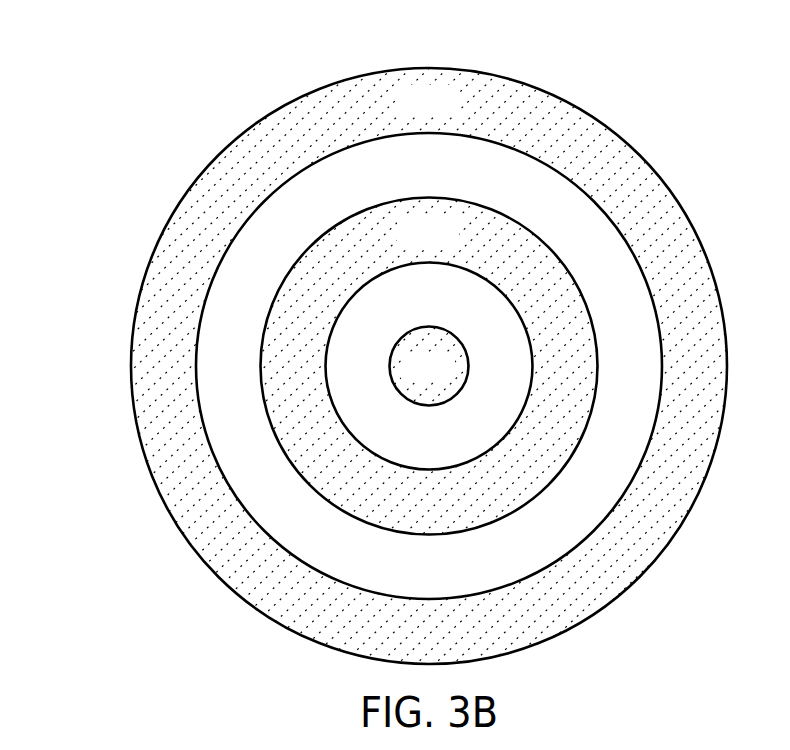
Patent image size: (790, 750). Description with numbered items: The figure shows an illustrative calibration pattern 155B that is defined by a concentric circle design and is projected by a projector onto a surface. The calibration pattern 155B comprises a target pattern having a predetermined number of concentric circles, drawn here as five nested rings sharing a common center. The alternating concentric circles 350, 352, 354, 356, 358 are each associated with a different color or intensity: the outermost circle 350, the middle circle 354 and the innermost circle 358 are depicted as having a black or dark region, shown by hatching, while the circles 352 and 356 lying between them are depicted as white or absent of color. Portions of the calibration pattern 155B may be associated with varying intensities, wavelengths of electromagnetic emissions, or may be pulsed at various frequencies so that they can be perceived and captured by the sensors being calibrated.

The calibration pattern 155B is at (395, 366).
The concentric circle 350 is at (403, 114).
The concentric circle 352 is at (403, 178).
The concentric circle 354 is at (403, 244).
The concentric circle 356 is at (403, 312).
The concentric circle 358 is at (403, 378).